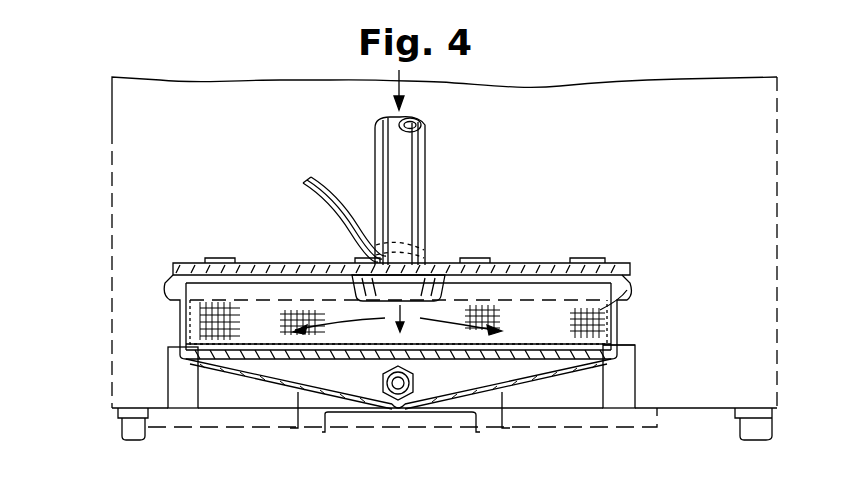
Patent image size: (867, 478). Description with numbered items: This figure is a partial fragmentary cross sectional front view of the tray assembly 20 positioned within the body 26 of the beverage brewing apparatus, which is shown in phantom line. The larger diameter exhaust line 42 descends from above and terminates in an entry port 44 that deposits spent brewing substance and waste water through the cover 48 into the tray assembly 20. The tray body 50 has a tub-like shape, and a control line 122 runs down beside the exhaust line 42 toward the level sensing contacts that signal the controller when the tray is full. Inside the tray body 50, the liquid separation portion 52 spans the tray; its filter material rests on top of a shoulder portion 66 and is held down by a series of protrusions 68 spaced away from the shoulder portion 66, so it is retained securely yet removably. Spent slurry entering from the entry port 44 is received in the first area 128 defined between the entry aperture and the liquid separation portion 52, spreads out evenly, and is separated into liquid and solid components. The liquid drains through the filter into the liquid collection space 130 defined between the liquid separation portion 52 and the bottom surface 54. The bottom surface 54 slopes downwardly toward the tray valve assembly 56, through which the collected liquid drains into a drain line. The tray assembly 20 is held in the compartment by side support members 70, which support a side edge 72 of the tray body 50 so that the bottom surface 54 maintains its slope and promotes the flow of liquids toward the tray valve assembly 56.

The tray assembly 20 is at (422, 264).
The body 26 is at (110, 190).
The exhaust line 42 is at (412, 152).
The entry port 44 is at (430, 262).
The cover 48 is at (560, 275).
The tray body 50 is at (628, 318).
The liquid separation portion 52 is at (226, 336).
The bottom surface 54 is at (262, 378).
The tray valve assembly 56 is at (425, 405).
The shoulder portion 66 is at (622, 333).
The protrusions 68 is at (523, 345).
The side support members 70 is at (625, 393).
The side edge 72 is at (637, 360).
The control line 122 is at (305, 197).
The first area 128 is at (560, 334).
The liquid collection space 130 is at (460, 392).